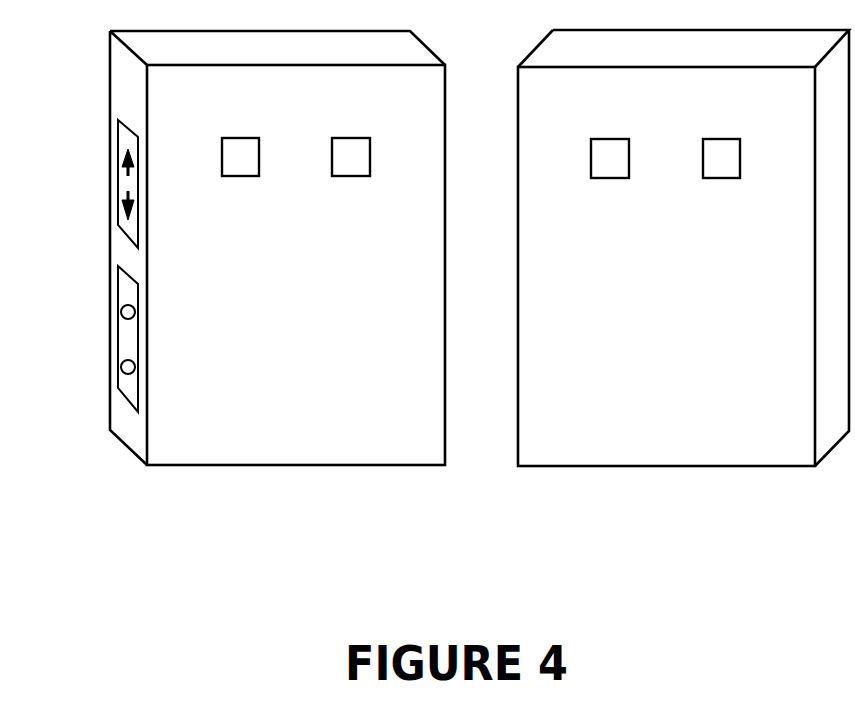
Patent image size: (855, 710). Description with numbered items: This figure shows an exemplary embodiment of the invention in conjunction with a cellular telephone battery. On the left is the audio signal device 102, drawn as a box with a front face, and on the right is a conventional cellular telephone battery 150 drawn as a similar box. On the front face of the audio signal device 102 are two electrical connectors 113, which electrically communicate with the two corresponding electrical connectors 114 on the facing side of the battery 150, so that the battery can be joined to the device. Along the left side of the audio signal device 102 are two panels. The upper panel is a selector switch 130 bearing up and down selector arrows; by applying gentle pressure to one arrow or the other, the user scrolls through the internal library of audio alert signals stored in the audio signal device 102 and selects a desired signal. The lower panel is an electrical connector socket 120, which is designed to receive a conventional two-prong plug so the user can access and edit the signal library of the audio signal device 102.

The audio signal device 102 is at (315, 466).
The cellular telephone battery 150 is at (591, 466).
The electrical connectors 113 is at (352, 138).
The electrical connectors 114 is at (722, 139).
The selector switch 130 is at (118, 222).
The electrical connector socket 120 is at (118, 378).